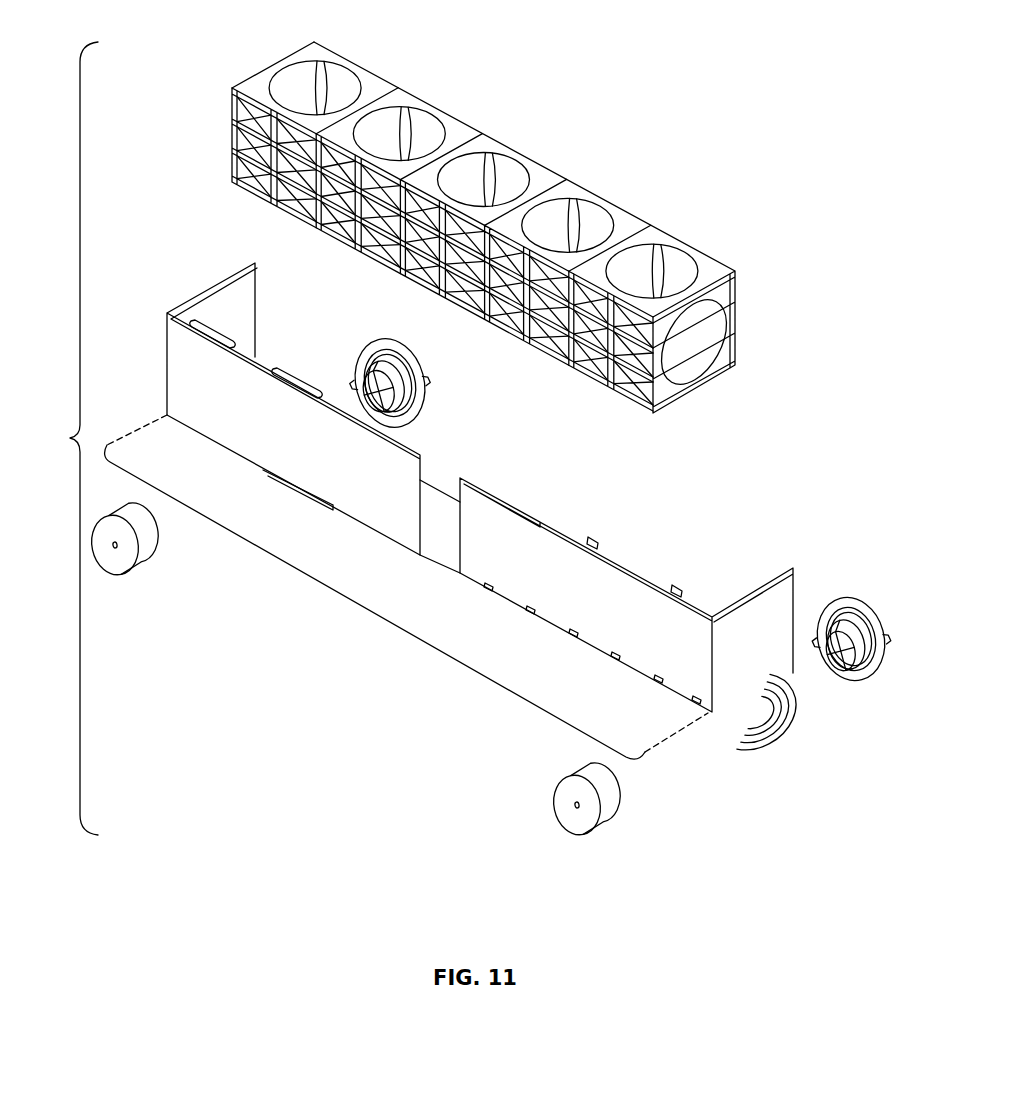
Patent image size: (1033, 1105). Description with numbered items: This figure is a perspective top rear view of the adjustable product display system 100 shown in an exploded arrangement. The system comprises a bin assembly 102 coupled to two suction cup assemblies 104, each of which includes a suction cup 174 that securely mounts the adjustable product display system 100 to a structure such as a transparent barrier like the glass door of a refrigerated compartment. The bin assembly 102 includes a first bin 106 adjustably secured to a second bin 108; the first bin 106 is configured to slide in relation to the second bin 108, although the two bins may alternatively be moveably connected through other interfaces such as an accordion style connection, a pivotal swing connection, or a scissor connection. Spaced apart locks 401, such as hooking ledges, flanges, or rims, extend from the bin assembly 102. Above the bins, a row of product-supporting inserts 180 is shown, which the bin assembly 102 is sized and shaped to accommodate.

The adjustable product display system 100 is at (70, 438).
The bin assembly 102 is at (370, 612).
The suction cup assembly 104 is at (125, 580).
The first bin 106 is at (365, 488).
The second bin 108 is at (573, 603).
The suction cup 174 is at (425, 404).
The product-supporting insert 180 is at (345, 60).
The lock 401 is at (232, 334).